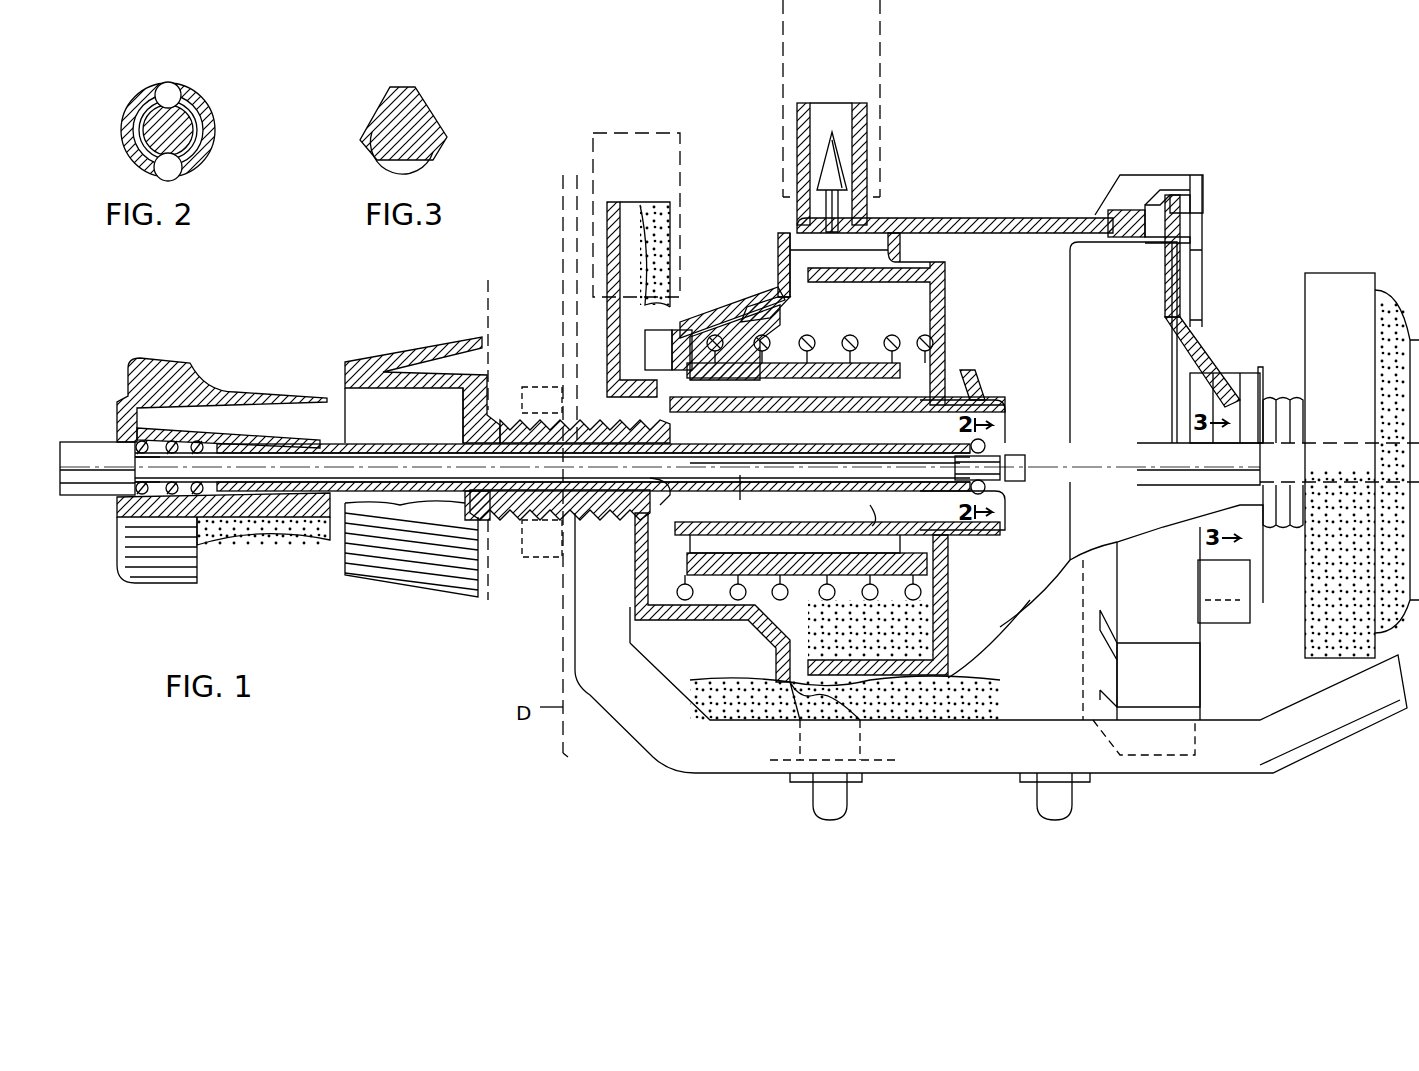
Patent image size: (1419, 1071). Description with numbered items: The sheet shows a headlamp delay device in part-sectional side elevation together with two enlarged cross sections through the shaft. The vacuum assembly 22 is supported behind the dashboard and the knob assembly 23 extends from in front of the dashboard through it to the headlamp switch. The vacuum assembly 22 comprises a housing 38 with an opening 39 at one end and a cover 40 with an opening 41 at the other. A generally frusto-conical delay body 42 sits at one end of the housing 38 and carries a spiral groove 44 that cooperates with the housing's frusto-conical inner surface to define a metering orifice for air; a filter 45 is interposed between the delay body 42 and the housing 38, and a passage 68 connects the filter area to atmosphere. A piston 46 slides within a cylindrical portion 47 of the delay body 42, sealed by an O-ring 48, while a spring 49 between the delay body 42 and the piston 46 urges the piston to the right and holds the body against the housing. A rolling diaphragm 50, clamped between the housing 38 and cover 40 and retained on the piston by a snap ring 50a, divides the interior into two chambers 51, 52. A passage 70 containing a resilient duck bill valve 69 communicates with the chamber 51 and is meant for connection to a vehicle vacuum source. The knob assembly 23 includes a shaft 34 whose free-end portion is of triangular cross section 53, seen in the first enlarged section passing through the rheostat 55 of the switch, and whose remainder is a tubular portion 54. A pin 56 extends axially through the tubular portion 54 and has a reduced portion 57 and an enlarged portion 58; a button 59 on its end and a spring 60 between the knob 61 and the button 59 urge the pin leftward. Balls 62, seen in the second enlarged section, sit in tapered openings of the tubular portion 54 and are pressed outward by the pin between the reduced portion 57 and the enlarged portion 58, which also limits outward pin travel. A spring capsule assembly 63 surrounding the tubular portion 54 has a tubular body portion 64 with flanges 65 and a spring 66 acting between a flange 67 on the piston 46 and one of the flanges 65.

In FIG. 1, the vacuum assembly 22 is at (1008, 208).
In FIG. 1, the knob assembly 23 is at (238, 373).
In FIG. 3, the shaft 34 is at (427, 86).
In FIG. 1, the shaft 34 is at (1158, 434).
In FIG. 1, the housing 38 is at (1058, 215).
In FIG. 1, the opening 39 is at (650, 520).
In FIG. 1, the cover 40 is at (1200, 262).
In FIG. 1, the opening 41 is at (1225, 390).
In FIG. 1, the delay body 42 is at (760, 305).
In FIG. 1, the spiral groove 44 is at (770, 300).
In FIG. 1, the filter 45 is at (690, 325).
In FIG. 1, the piston 46 is at (985, 393).
In FIG. 1, the cylindrical portion 47 is at (827, 345).
In FIG. 1, the O-ring 48 is at (900, 580).
In FIG. 1, the spring 49 is at (808, 335).
In FIG. 1, the rolling diaphragm 50 is at (948, 290).
In FIG. 1, the snap ring 50a is at (975, 390).
In FIG. 1, the chamber 51 is at (880, 240).
In FIG. 1, the chamber 52 is at (1078, 268).
In FIG. 3, the triangular portion 53 is at (420, 107).
In FIG. 2, the tubular portion 54 is at (214, 128).
In FIG. 1, the tubular portion 54 is at (335, 440).
In FIG. 1, the rheostat 55 is at (1335, 272).
In FIG. 2, the pin 56 is at (185, 115).
In FIG. 1, the pin 56 is at (262, 455).
In FIG. 1, the portion of reduced cross section 57 is at (955, 467).
In FIG. 1, the enlarged portion 58 is at (1010, 460).
In FIG. 1, the button 59 is at (80, 440).
In FIG. 1, the spring 60 is at (137, 452).
In FIG. 1, the knob 61 is at (175, 362).
In FIG. 2, the balls 62 is at (178, 85).
In FIG. 1, the balls 62 is at (985, 445).
In FIG. 1, the spring capsule assembly 63 is at (820, 435).
In FIG. 1, the tubular body portion 64 is at (700, 500).
In FIG. 1, the flanges 65 is at (655, 482).
In FIG. 1, the spring 66 is at (745, 490).
In FIG. 1, the flange 67 is at (660, 520).
In FIG. 1, the passage 68 is at (607, 202).
In FIG. 1, the duck bill valve 69 is at (848, 150).
In FIG. 1, the passage 70 is at (867, 120).